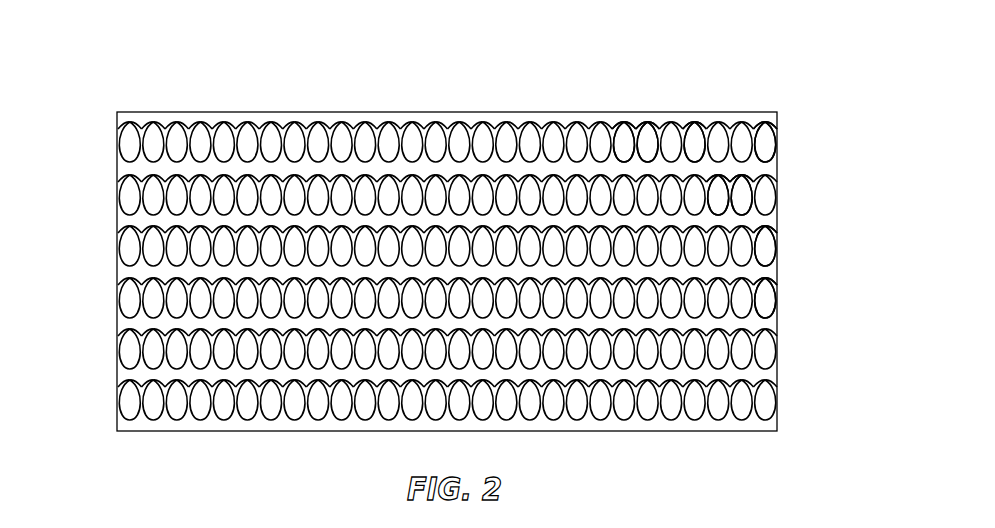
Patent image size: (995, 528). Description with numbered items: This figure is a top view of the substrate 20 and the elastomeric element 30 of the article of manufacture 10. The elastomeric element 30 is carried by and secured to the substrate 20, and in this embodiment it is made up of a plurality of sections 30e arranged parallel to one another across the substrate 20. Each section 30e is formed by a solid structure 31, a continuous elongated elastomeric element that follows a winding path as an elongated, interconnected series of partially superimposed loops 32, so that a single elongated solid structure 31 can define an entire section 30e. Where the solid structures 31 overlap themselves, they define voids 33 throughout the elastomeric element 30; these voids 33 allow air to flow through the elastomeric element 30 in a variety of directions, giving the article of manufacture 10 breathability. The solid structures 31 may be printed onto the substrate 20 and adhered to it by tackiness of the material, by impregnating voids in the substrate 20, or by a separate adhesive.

The article of manufacture 10 is at (451, 232).
The substrate 20 is at (233, 118).
The elastomeric element 30 is at (128, 269).
The sections 30e is at (776, 293).
The solid structures 31 is at (656, 150).
The partially superimposed loops 32 is at (709, 189).
The voids 33 is at (745, 186).